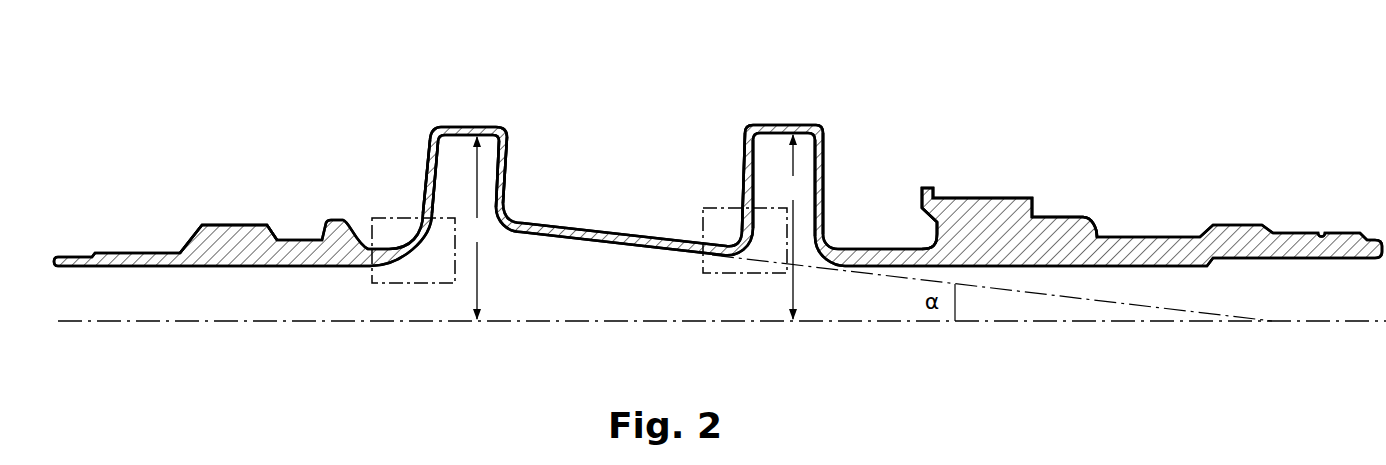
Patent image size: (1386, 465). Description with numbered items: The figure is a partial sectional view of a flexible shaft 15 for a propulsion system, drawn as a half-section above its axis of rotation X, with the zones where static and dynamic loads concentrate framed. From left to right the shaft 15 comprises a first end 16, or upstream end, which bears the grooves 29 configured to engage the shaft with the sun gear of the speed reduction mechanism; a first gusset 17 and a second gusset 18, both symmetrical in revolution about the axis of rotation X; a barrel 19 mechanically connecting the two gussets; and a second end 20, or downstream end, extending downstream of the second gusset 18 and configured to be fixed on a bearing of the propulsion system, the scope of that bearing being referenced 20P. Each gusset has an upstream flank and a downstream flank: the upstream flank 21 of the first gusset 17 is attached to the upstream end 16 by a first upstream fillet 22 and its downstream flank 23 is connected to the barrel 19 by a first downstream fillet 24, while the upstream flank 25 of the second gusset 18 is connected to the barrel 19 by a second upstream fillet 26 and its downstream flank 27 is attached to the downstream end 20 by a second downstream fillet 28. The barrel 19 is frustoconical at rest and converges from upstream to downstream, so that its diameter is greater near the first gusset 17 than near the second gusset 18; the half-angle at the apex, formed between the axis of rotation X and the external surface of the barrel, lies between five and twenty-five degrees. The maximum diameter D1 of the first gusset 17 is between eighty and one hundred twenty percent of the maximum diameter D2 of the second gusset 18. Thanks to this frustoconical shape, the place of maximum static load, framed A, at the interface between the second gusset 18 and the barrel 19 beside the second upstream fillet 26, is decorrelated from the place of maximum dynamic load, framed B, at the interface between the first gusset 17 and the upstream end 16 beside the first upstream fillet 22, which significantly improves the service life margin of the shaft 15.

The shaft 15 is at (1276, 168).
The first end 16 is at (230, 267).
The first gusset 17 is at (496, 98).
The second gusset 18 is at (839, 115).
The barrel 19 is at (617, 252).
The second end 20 is at (1253, 262).
The scope with a bearing 20P is at (987, 193).
The upstream flank 21 is at (430, 160).
The first upstream fillet 22 is at (418, 236).
The downstream flank 23 is at (508, 160).
The first downstream fillet 24 is at (503, 225).
The upstream flank 25 is at (744, 160).
The second upstream fillet 26 is at (738, 250).
The downstream flank 27 is at (824, 160).
The second downstream fillet 28 is at (821, 258).
The grooves 29 is at (237, 228).
The place of maximum static load A is at (760, 276).
The place of maximum dynamic load B is at (405, 286).
The maximum diameter of the first gusset D1 is at (477, 228).
The maximum diameter of the second gusset D2 is at (793, 227).
The axis of rotation X is at (1331, 322).